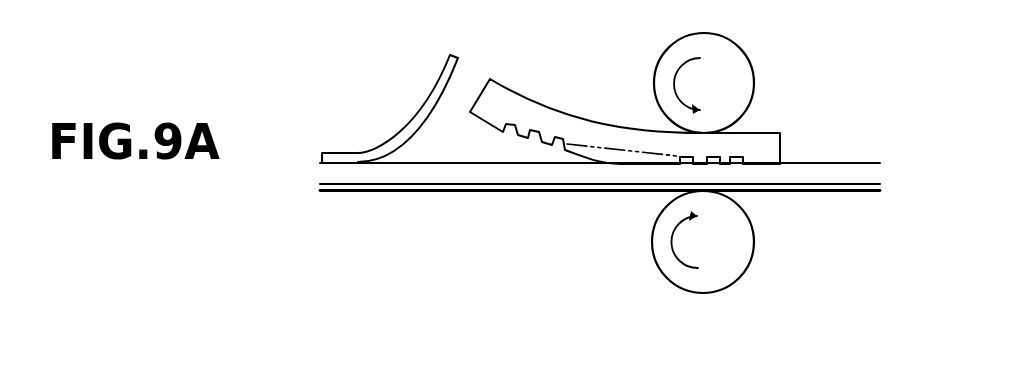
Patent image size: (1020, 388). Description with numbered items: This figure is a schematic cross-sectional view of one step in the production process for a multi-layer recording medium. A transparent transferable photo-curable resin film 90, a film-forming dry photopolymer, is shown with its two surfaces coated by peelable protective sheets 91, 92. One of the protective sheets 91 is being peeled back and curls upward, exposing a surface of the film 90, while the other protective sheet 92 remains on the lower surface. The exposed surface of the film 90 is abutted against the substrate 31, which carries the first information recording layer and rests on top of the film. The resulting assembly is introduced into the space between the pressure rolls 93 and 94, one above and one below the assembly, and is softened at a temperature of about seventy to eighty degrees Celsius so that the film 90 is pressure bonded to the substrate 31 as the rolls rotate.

The transparent transferable photo-curable resin film 90 is at (360, 172).
The protective sheet 91 is at (423, 107).
The protective sheet 92 is at (458, 191).
The substrate 31 is at (768, 145).
The pressure roll 93 is at (740, 70).
The pressure roll 94 is at (733, 235).